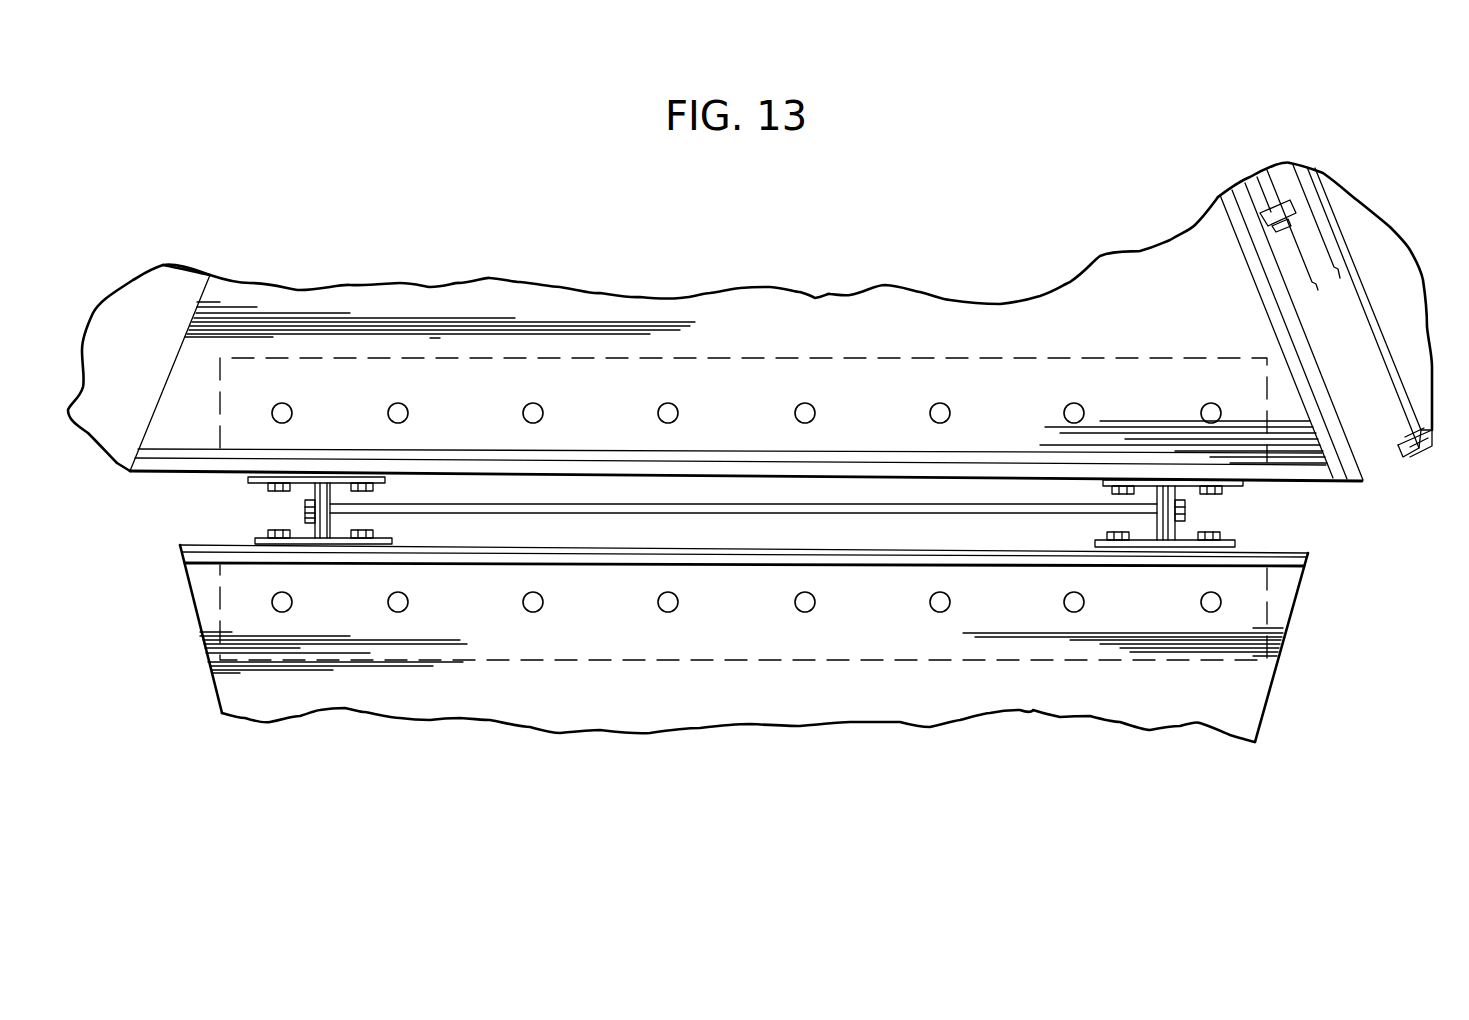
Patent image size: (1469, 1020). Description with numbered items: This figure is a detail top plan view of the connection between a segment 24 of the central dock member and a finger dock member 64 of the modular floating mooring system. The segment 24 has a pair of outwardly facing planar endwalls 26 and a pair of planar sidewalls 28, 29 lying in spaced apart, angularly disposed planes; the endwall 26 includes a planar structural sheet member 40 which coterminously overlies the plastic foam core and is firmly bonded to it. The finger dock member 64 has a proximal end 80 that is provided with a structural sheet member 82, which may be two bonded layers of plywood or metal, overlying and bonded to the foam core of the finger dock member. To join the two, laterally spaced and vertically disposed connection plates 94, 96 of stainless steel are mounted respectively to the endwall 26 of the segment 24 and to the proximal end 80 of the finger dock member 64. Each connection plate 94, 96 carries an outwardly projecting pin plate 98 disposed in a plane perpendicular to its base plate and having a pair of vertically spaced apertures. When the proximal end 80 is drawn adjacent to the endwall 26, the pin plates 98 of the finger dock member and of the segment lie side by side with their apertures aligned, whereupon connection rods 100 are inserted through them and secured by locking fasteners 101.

The segment 24 is at (1062, 282).
The endwall 26 is at (1322, 488).
The sidewall 28 is at (1366, 467).
The sidewall 29 is at (1385, 425).
The structural sheet member 40 is at (1005, 451).
The finger dock member 64 is at (1055, 722).
The proximal end 80 is at (660, 545).
The structural sheet member 82 is at (890, 562).
The connection plate 94 is at (1246, 490).
The connection plate 96 is at (256, 535).
The pin plate 98 is at (328, 483).
The connection rod 100 is at (740, 516).
The locking fastener 101 is at (305, 532).